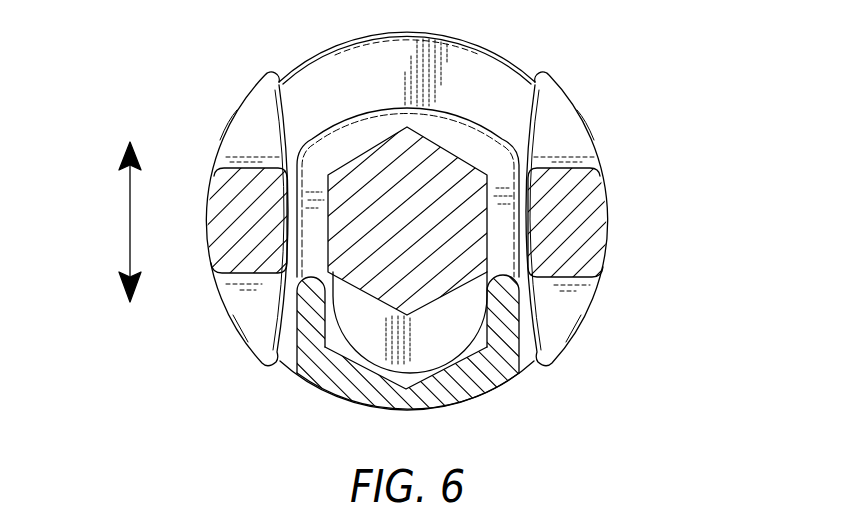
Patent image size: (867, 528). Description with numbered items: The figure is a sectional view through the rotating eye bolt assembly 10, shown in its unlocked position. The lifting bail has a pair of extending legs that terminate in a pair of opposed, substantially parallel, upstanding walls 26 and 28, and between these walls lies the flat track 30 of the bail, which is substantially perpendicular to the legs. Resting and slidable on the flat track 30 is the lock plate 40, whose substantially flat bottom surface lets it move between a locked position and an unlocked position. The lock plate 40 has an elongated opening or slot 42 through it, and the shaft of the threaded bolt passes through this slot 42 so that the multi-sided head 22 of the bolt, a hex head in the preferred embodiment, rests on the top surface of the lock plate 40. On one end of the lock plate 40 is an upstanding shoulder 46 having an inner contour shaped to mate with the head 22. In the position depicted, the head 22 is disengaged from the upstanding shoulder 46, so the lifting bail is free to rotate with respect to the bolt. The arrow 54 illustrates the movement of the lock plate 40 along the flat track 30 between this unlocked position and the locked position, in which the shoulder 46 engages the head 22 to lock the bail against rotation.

The rotating eye bolt assembly 10 is at (660, 83).
The multi-sided head 22 is at (458, 243).
The upstanding wall 26 is at (280, 322).
The upstanding wall 28 is at (537, 325).
The flat track 30 is at (491, 84).
The lock plate 40 is at (326, 147).
The elongated slot 42 is at (355, 343).
The upstanding shoulder 46 is at (492, 377).
The arrow 54 is at (130, 217).